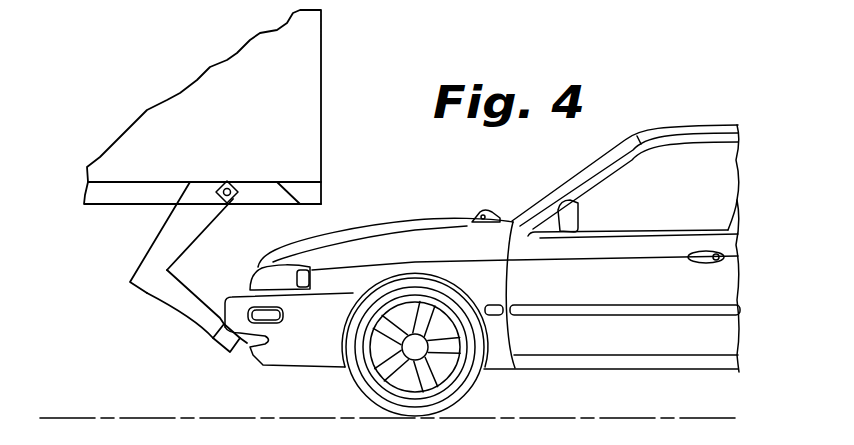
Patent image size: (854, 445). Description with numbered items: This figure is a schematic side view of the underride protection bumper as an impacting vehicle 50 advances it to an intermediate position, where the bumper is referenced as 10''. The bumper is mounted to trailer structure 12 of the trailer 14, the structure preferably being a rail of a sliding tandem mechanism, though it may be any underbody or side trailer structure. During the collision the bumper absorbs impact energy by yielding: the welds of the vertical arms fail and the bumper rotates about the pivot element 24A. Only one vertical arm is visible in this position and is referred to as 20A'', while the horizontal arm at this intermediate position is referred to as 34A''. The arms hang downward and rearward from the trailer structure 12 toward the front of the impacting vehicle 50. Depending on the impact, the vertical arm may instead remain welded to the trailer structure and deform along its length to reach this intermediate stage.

The underride protection bumper in intermediate position 10'' is at (209, 206).
The trailer structure 12 is at (265, 197).
The trailer 14 is at (321, 98).
The vertical arm in intermediate position 20A'' is at (136, 237).
The pivot element 24A is at (228, 181).
The horizontal arm in intermediate position 34A'' is at (160, 311).
The impacting vehicle 50 is at (374, 229).